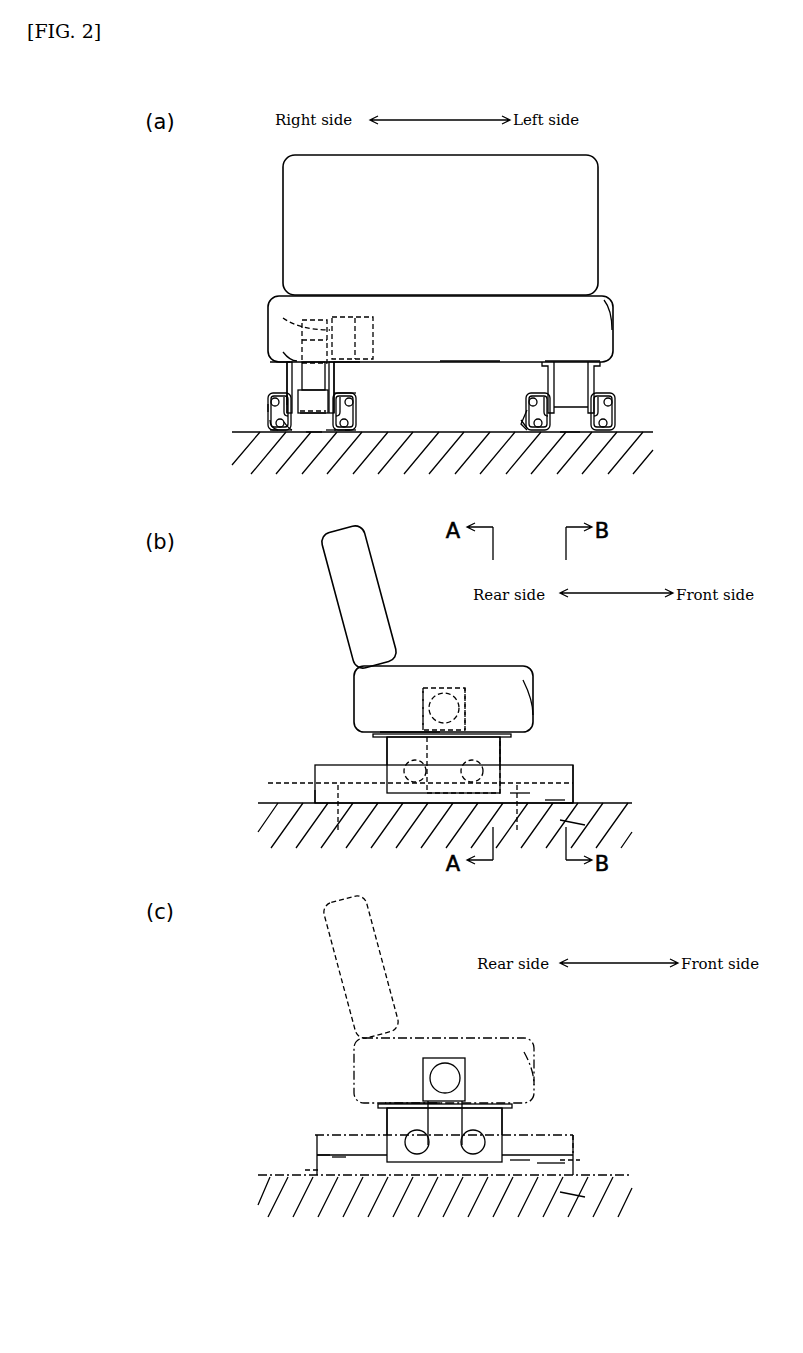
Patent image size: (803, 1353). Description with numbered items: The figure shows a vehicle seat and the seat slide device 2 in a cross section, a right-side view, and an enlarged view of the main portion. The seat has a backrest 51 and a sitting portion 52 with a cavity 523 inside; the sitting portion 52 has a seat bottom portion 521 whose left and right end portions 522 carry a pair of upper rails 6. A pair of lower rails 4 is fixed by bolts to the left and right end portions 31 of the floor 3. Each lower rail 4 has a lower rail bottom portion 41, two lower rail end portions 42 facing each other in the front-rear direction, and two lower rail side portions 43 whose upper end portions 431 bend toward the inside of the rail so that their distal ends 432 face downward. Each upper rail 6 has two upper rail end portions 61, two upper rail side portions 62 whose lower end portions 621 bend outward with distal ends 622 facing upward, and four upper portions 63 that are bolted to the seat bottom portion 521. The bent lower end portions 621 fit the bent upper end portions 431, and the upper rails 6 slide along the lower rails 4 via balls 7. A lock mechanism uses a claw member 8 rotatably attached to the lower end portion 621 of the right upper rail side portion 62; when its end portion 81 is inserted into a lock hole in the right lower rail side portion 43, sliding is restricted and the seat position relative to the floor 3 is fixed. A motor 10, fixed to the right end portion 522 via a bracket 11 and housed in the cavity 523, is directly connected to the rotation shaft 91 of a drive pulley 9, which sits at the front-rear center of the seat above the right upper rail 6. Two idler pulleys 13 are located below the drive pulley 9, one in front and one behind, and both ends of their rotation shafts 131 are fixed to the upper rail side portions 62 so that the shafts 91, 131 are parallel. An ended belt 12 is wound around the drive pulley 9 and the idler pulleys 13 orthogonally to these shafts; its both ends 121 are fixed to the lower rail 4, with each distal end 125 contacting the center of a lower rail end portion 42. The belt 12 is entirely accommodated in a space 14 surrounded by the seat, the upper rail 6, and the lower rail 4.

The seat slide device 2 is at (203, 313).
The floor 3 is at (631, 431).
The lower rail 4 is at (356, 408).
The upper rail 6 is at (334, 377).
The ball 7 is at (278, 432).
The claw member 8 is at (526, 412).
The drive pulley 9 is at (302, 330).
The motor 10 is at (352, 318).
The bracket 11 is at (372, 320).
The ended belt 12 is at (283, 318).
The idler pulley 13 is at (313, 402).
The space 14 is at (290, 378).
The end portion of the floor 31 is at (315, 433).
The lower rail bottom portion 41 is at (331, 432).
The lower rail end portion 42 is at (318, 416).
The lower rail side portion 43 is at (345, 432).
The backrest 51 is at (598, 222).
The sitting portion 52 is at (612, 312).
The upper rail end portion 61 is at (338, 381).
The upper rail side portion 62 is at (338, 390).
The upper portion 63 is at (362, 362).
The end portion of the claw member 81 is at (518, 415).
The rotation shaft of the drive pulley 91 is at (320, 322).
The ends of the ended belt 121 is at (339, 792).
The distal end of the belt end 125 is at (305, 783).
The rotation shaft of the idler pulley 131 is at (334, 412).
The upper end portion of the lower rail side portion 431 is at (287, 398).
The distal end of the upper end portion 432 is at (276, 422).
The seat bottom portion 521 is at (468, 361).
The end portion of the seat bottom portion 522 is at (297, 353).
The cavity 523 is at (604, 330).
The lower end portion of the upper rail side portion 621 is at (290, 431).
The distal end of the lower end portion 622 is at (268, 408).